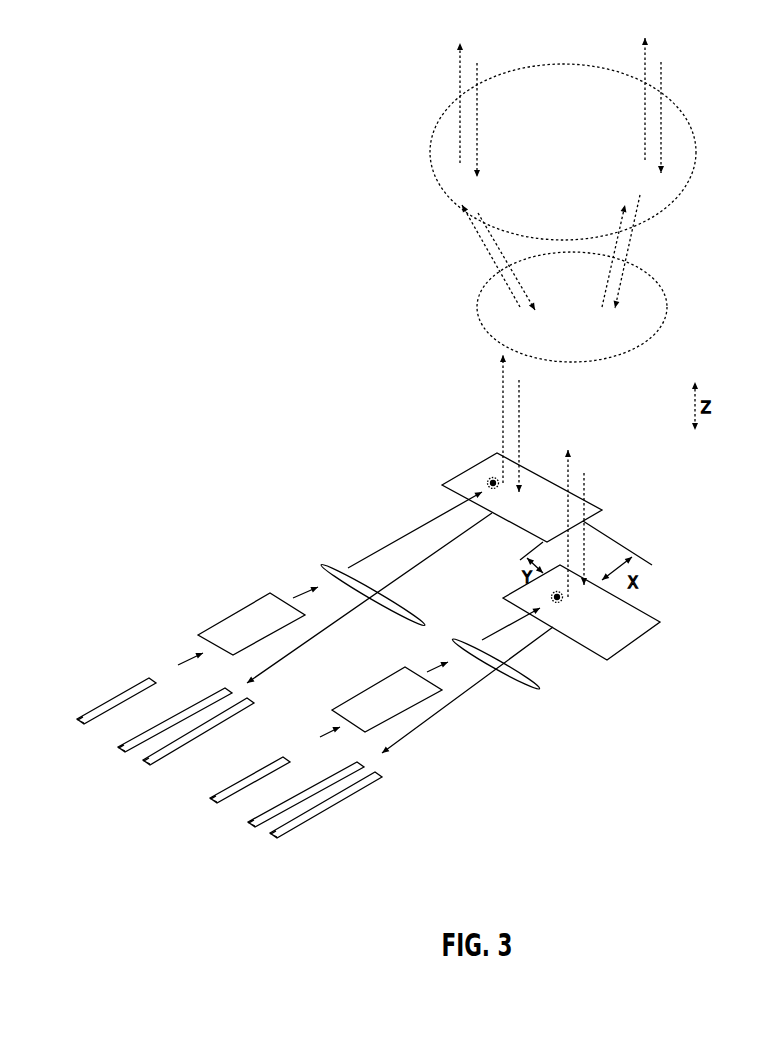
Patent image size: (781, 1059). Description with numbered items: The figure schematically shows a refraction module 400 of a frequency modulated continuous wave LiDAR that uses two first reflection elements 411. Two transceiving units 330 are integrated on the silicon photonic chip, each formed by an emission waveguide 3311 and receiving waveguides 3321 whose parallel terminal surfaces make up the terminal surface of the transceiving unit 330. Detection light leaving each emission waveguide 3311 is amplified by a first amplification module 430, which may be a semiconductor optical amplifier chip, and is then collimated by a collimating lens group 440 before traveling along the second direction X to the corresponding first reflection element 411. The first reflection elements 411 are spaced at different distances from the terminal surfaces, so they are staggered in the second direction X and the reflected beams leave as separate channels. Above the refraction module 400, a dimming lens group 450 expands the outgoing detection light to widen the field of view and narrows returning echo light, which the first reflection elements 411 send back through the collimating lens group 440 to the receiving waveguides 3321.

The transceiving unit 330 is at (210, 788).
The emission waveguide 3311 is at (78, 721).
The receiving waveguide 3321 is at (118, 747).
The refraction module 400 is at (603, 567).
The first reflection element 411 is at (593, 518).
The first amplification module 430 is at (225, 618).
The collimating lens group 440 is at (323, 565).
The dimming lens group 450 is at (648, 260).